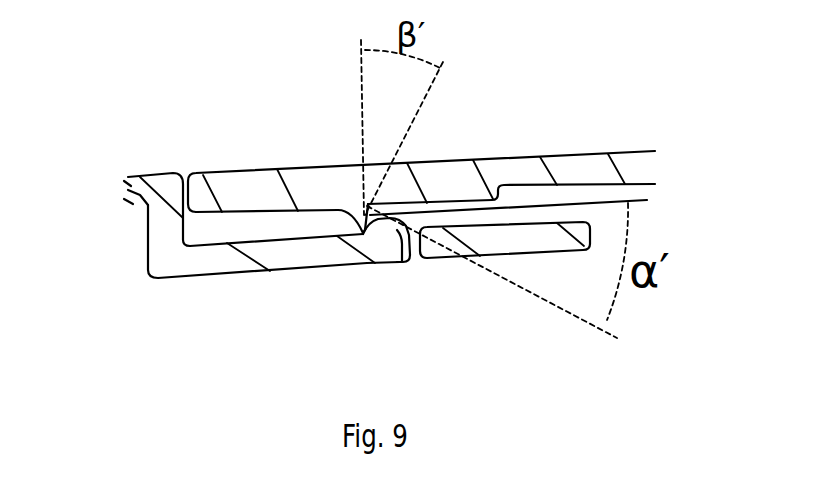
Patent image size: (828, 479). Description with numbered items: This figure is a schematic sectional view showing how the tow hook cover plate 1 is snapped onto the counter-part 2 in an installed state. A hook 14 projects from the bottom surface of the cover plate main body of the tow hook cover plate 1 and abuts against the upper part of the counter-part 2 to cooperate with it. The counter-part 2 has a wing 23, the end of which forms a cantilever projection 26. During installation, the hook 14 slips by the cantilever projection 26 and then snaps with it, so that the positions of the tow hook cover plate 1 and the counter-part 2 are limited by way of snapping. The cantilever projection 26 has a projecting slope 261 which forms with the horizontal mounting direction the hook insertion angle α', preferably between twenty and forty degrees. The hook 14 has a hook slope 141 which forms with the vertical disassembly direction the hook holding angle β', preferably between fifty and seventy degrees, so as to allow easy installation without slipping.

The tow hook cover plate 1 is at (440, 129).
The counter-part 2 is at (350, 226).
The hook 14 is at (358, 230).
The hook slope 141 is at (362, 217).
The wing 23 is at (222, 266).
The cantilever projection 26 is at (403, 302).
The projecting slope 261 is at (403, 263).